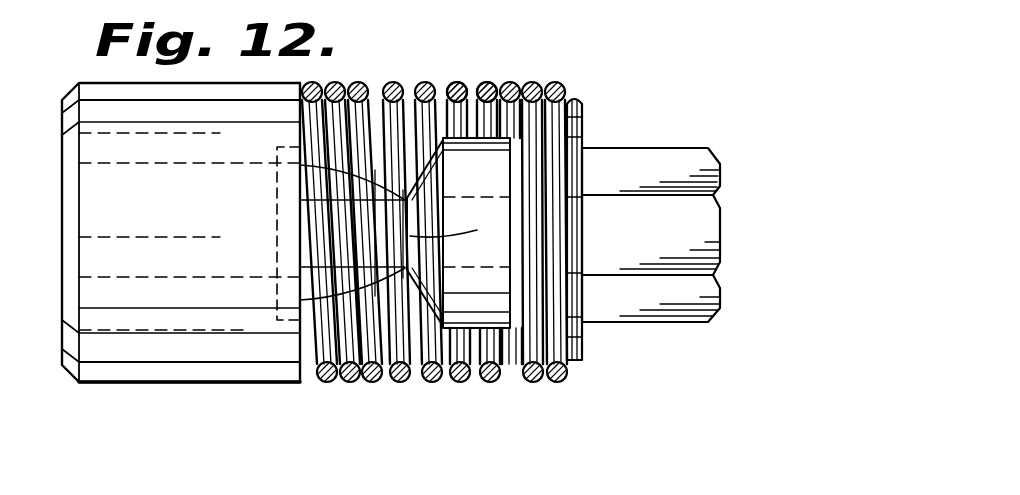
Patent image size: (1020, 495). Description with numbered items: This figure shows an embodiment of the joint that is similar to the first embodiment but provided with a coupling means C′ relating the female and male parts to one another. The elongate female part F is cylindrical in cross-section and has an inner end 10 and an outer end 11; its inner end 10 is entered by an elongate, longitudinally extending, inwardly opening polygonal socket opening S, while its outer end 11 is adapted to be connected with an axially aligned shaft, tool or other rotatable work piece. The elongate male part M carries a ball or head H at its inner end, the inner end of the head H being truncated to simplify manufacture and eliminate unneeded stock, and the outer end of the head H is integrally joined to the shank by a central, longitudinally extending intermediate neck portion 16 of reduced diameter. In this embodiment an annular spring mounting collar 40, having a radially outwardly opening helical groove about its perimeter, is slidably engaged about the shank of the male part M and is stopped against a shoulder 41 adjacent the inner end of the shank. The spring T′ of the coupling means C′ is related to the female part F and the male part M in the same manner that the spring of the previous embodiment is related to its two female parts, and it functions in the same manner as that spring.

The inner end 10 is at (392, 82).
The outer end 11 is at (62, 366).
The intermediate neck portion 16 is at (407, 203).
The annular spring mounting collar 40 is at (583, 105).
The shoulder 41 is at (582, 137).
The coupling means C′ is at (461, 80).
The spring T′ is at (494, 78).
The polygonal socket opening S is at (286, 157).
The head H is at (444, 224).
The male part M is at (722, 166).
The female part F is at (143, 390).